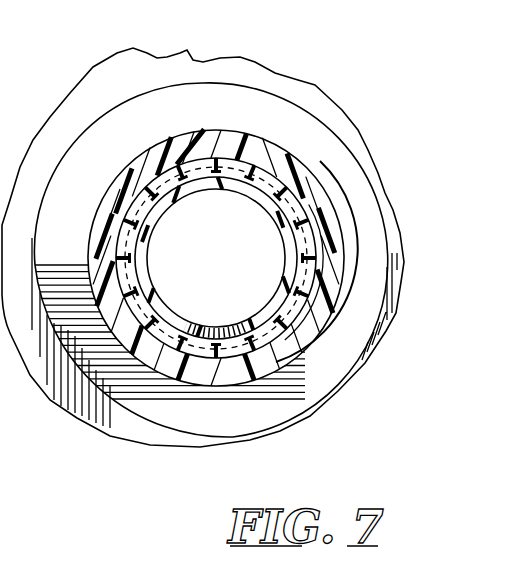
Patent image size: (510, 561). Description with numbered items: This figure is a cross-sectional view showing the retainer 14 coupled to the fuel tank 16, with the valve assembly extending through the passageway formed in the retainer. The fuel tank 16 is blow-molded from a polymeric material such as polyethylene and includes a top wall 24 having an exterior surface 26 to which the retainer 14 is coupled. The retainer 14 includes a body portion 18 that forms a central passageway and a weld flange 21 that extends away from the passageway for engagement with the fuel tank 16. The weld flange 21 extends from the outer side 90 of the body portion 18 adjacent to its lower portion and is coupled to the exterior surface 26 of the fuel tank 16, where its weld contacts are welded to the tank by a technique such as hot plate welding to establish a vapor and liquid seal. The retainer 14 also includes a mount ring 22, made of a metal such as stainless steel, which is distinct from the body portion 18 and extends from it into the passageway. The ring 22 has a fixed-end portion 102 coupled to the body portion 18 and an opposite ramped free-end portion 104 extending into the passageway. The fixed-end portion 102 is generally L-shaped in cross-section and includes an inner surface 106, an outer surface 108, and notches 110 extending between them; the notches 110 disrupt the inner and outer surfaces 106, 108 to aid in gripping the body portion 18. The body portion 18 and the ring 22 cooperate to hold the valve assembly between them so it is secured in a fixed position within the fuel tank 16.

The retainer 14 is at (127, 411).
The fuel tank 16 is at (317, 82).
The body portion 18 is at (323, 341).
The weld flange 21 is at (233, 413).
The mount ring 22 is at (288, 343).
The top wall 24 is at (152, 429).
The exterior surface 26 is at (52, 128).
The outer side 90 is at (281, 347).
The fixed-end portion 102 is at (306, 186).
The ramped free-end portion 104 is at (208, 338).
The inner surface 106 is at (291, 238).
The outer surface 108 is at (163, 186).
The notches 110 is at (128, 258).